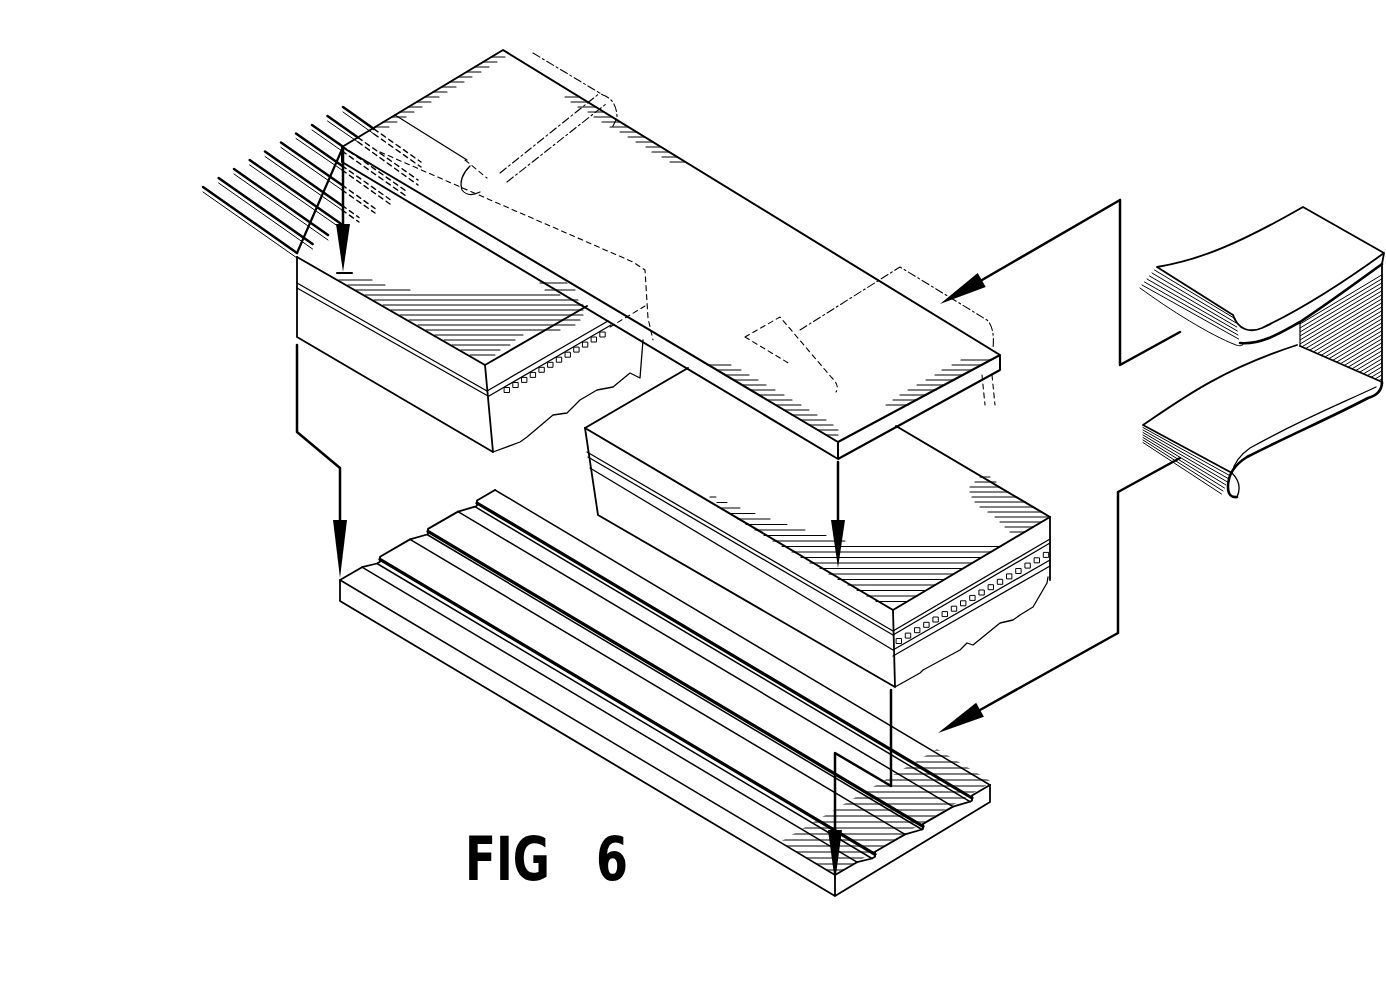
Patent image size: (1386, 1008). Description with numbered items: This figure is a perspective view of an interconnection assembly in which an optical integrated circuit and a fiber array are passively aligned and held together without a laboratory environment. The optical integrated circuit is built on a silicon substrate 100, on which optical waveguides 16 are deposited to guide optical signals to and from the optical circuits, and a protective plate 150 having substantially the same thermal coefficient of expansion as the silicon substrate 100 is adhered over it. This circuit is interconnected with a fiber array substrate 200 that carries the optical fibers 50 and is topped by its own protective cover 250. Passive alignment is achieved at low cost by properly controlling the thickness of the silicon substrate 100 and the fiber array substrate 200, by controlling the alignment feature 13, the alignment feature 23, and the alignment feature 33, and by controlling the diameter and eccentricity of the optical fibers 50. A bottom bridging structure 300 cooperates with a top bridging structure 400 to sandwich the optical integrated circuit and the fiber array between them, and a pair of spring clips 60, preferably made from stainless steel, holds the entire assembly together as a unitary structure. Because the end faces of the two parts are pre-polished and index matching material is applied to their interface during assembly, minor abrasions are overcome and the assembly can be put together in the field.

The optical fibers 50 is at (232, 158).
The spring clips 60 is at (606, 92).
The top bridging structure 400 is at (700, 241).
The protective cover 250 is at (473, 283).
The fiber array substrate 200 is at (303, 313).
The alignment feature 23 is at (531, 426).
The protective plate 150 is at (768, 481).
The silicon substrate 100 is at (1041, 587).
The optical waveguides 16 is at (1046, 556).
The alignment feature 13 is at (1018, 618).
The bottom bridging structure 300 is at (471, 667).
The alignment feature 33 is at (923, 818).